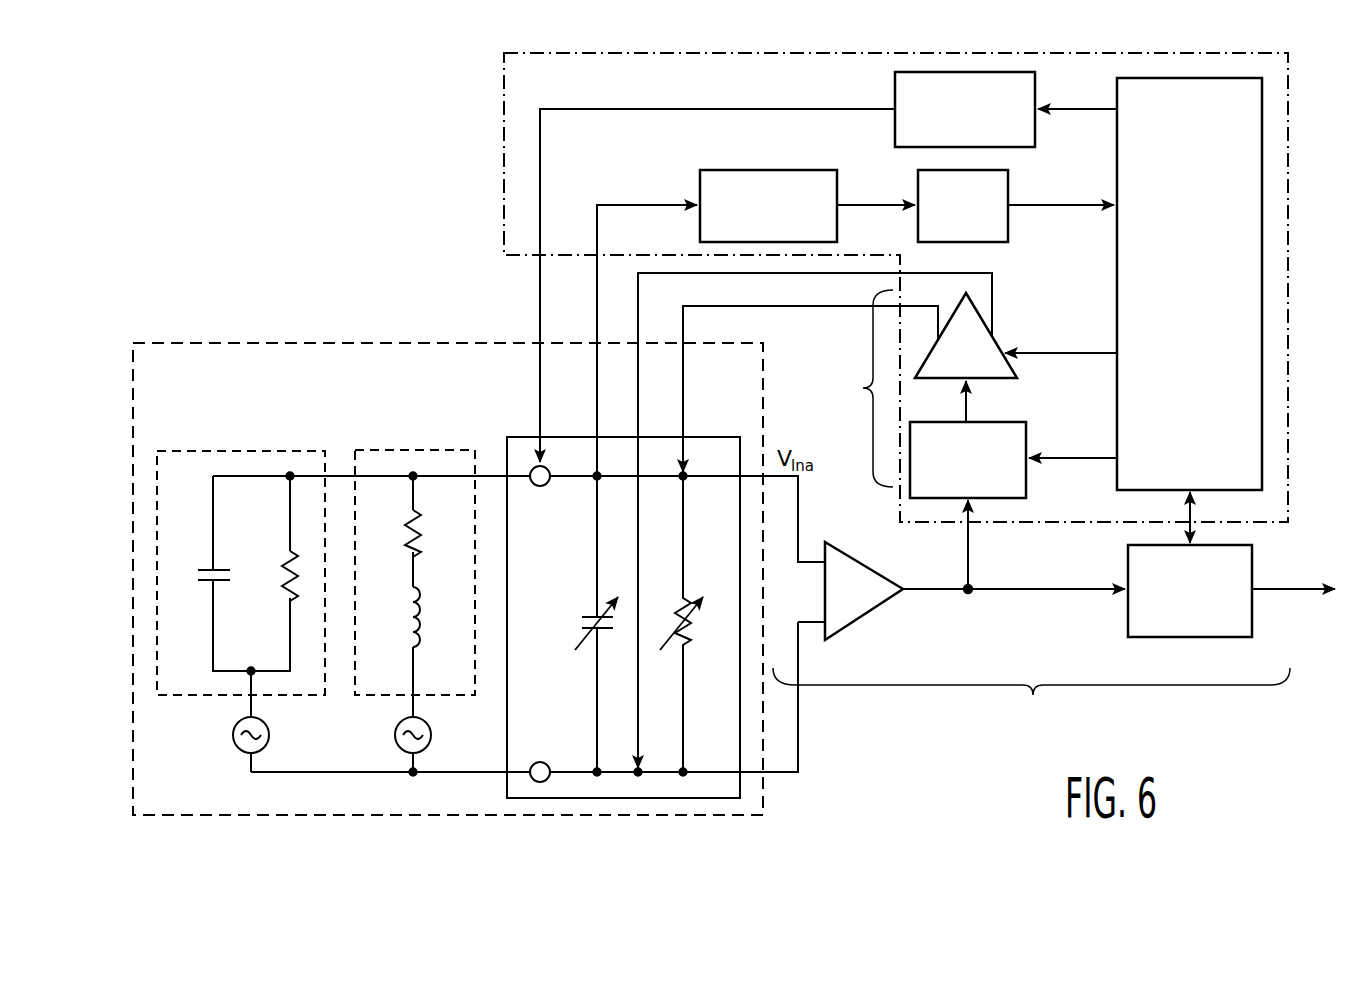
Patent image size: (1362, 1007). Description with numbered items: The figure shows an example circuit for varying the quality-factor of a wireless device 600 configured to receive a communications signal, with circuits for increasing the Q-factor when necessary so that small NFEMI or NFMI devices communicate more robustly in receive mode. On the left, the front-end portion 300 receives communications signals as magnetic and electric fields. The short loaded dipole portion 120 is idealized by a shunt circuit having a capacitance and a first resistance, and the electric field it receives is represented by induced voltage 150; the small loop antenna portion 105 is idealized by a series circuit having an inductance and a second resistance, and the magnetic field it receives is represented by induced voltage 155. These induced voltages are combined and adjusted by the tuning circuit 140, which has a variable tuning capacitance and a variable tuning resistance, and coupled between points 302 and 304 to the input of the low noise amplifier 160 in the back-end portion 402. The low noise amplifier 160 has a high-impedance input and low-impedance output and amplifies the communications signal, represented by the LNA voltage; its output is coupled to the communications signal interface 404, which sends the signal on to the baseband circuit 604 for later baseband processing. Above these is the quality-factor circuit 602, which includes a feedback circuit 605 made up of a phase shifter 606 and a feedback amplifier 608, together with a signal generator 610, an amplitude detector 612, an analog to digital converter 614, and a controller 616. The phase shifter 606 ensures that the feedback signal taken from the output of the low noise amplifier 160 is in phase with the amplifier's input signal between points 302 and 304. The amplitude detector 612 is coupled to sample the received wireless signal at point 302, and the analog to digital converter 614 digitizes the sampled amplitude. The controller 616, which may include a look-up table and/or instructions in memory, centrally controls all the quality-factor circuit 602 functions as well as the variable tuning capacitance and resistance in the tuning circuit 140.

The wireless device 600 is at (227, 113).
The quality-factor circuit 602 is at (504, 160).
The front-end portion 300 is at (208, 342).
The short loaded dipole portion 120 is at (173, 450).
The small loop antenna portion 105 is at (460, 450).
The induced voltage 150 is at (233, 735).
The induced voltage 155 is at (395, 735).
The tuning circuit 140 is at (720, 436).
The point 302 is at (540, 487).
The point 304 is at (540, 760).
The low noise amplifier 160 is at (875, 612).
The communications signal interface 404 is at (970, 596).
The back-end portion 402 is at (1031, 700).
The baseband circuit 604 is at (1252, 566).
The controller 616 is at (1207, 306).
The signal generator 610 is at (895, 90).
The amplitude detector 612 is at (700, 177).
The analog to digital converter 614 is at (1008, 190).
The feedback amplifier 608 is at (1000, 345).
The phase shifter 606 is at (1026, 428).
The feedback circuit 605 is at (855, 388).